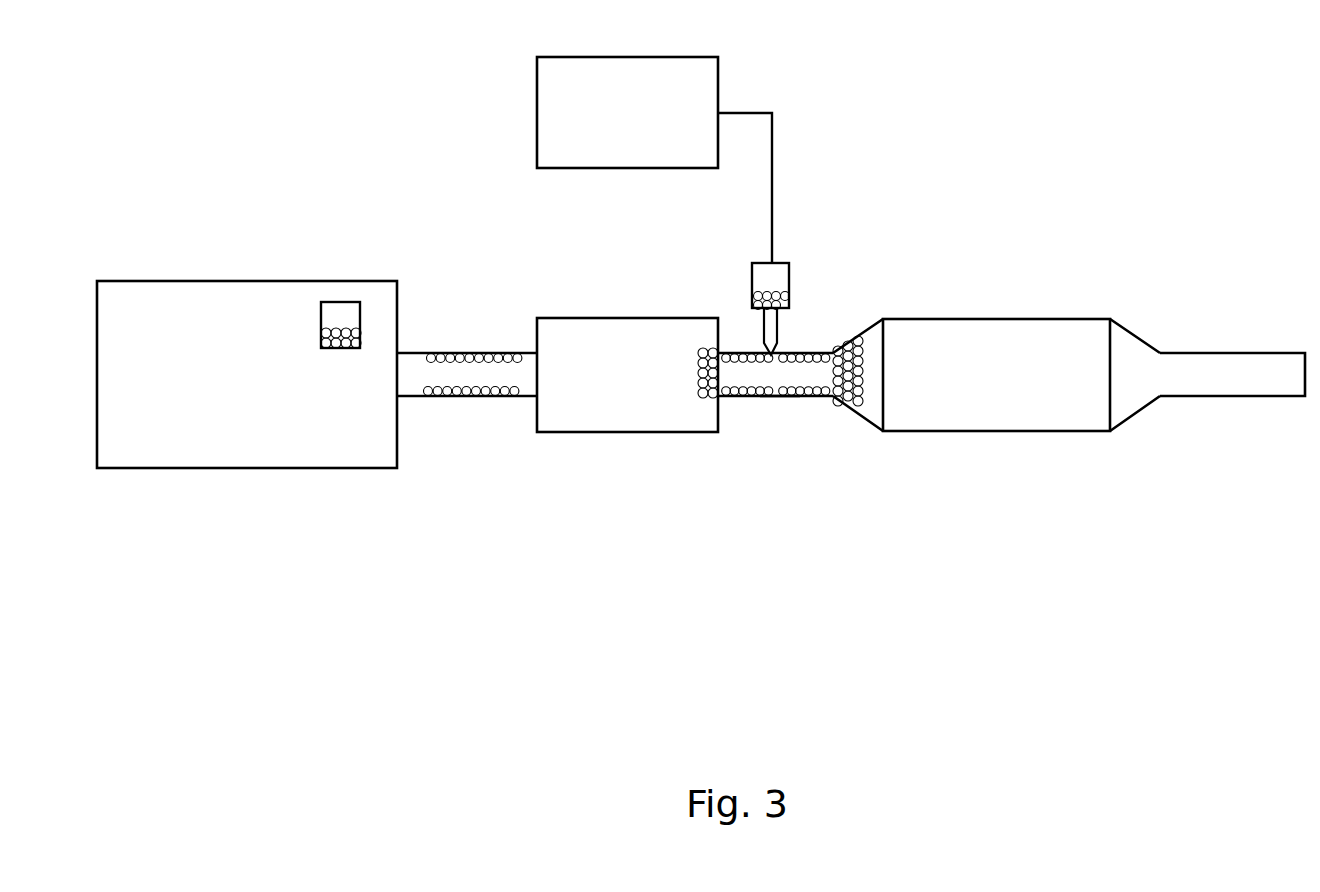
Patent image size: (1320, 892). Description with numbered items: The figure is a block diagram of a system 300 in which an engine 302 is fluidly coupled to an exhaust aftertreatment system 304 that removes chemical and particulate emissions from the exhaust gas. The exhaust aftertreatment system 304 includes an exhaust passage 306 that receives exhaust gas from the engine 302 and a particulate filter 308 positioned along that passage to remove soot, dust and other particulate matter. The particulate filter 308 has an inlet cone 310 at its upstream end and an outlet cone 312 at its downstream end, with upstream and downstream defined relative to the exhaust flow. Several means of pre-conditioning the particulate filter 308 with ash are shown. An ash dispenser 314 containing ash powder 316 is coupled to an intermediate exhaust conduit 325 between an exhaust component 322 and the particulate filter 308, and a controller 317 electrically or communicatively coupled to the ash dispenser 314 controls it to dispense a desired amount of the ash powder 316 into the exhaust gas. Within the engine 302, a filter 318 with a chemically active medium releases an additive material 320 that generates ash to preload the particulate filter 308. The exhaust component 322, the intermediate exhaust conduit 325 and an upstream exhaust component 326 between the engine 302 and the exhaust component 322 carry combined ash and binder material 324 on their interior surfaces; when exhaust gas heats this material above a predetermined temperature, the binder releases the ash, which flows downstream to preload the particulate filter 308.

The system 300 is at (1104, 150).
The engine 302 is at (247, 374).
The exhaust aftertreatment system 304 is at (623, 489).
The exhaust passage 306 is at (1260, 365).
The particulate filter 308 is at (996, 375).
The inlet cone 310 is at (872, 410).
The outlet cone 312 is at (1128, 403).
The ash dispenser 314 is at (777, 280).
The ash powder 316 is at (760, 298).
The controller 317 is at (654, 160).
The filter 318 is at (347, 313).
The additive material 320 is at (357, 345).
The exhaust component 322 is at (627, 375).
The combined ash and binder material 324 is at (450, 352).
The intermediate exhaust conduit 325 is at (780, 397).
The upstream exhaust component 326 is at (527, 352).